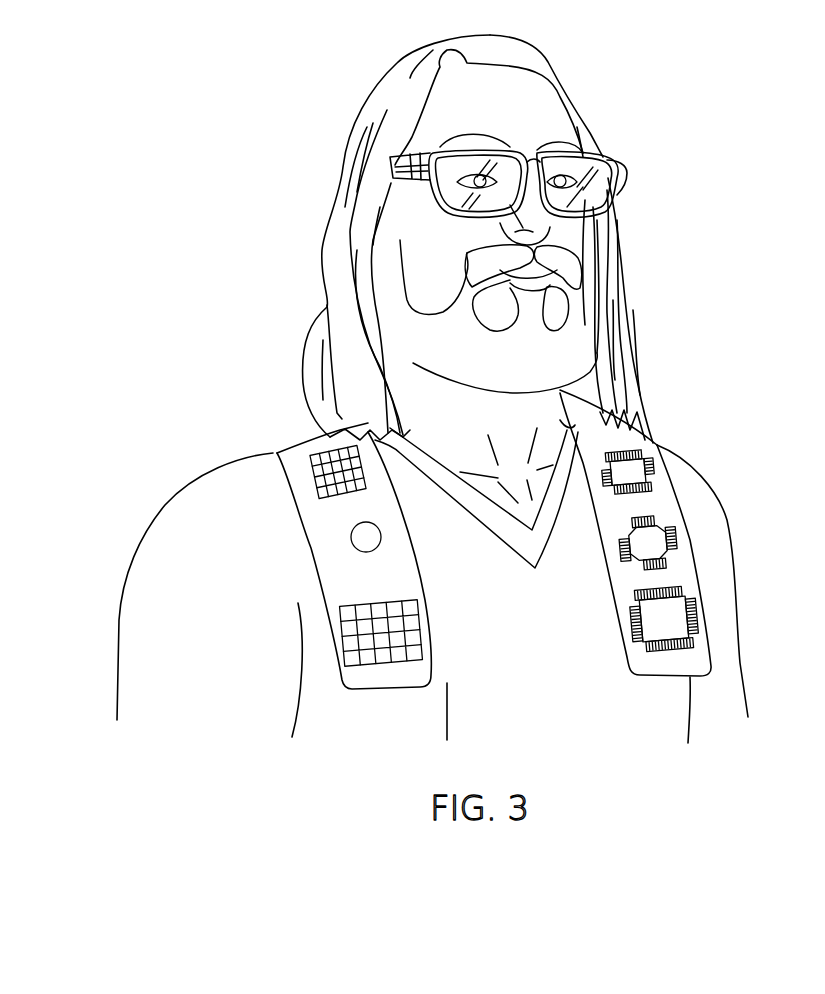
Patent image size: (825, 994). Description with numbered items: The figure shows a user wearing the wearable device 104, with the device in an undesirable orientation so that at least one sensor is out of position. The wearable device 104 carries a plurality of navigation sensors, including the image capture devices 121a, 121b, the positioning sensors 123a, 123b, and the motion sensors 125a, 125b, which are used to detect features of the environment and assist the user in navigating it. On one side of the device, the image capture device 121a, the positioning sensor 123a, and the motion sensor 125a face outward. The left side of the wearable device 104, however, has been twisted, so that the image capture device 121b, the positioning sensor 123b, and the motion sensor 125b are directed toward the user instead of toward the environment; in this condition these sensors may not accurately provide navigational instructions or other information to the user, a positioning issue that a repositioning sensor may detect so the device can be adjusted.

The wearable device 104 is at (268, 437).
The image capture device 121a is at (332, 480).
The image capture device 121b is at (640, 470).
The positioning sensor 123a is at (360, 537).
The positioning sensor 123b is at (660, 542).
The motion sensor 125a is at (357, 633).
The motion sensor 125b is at (677, 623).